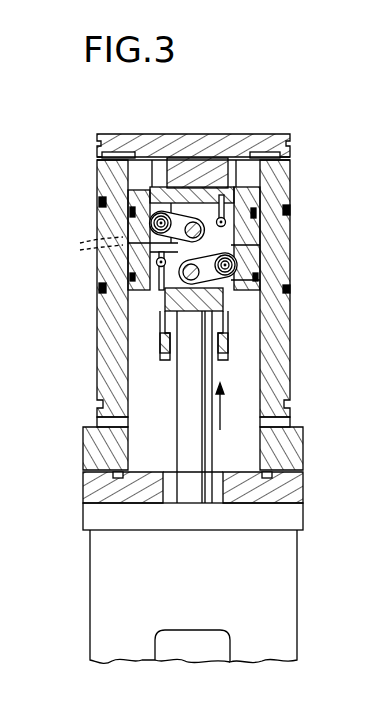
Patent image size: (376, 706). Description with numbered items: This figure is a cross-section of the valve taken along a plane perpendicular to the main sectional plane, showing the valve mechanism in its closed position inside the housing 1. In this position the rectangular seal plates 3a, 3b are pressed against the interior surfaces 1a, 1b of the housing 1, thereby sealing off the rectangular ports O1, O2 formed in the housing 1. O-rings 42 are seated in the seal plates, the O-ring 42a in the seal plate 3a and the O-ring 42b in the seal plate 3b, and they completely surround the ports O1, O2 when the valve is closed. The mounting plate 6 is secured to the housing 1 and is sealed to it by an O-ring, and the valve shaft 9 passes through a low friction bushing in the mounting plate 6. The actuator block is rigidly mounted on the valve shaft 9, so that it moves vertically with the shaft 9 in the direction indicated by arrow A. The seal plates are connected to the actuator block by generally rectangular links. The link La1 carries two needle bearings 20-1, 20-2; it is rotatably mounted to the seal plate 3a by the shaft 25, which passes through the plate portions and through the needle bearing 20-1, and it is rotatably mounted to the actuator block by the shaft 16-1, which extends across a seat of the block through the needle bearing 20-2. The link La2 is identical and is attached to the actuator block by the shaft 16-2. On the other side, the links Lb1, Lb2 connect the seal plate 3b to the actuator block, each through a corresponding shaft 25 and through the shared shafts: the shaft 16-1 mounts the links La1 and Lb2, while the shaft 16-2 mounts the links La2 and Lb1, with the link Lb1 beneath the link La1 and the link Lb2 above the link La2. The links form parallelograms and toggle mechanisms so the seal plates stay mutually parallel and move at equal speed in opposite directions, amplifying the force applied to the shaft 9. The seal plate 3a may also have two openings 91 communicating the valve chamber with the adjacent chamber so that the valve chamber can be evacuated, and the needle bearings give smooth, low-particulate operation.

The housing 1 is at (290, 160).
The interior surface 1a is at (140, 137).
The interior surface 1b is at (257, 137).
The needle bearing 20-1 is at (155, 185).
The needle bearing 20-2 is at (238, 185).
The shaft 16-1 is at (205, 175).
The shaft 16-2 is at (228, 318).
The valve shaft 9 is at (177, 393).
The O-rings 42 is at (100, 487).
The O-ring 42a is at (100, 195).
The O-ring 42b is at (287, 207).
The mounting plate 6 is at (292, 487).
The seal plate 3a is at (140, 290).
The seal plate 3b is at (258, 250).
The shaft 25 is at (120, 213).
The link La1 is at (168, 160).
The link La2 is at (165, 283).
The link Lb1 is at (237, 293).
The link Lb2 is at (237, 230).
The port O1 is at (125, 240).
The port O2 is at (235, 240).
The openings 91 is at (80, 250).
The arrow A is at (227, 393).